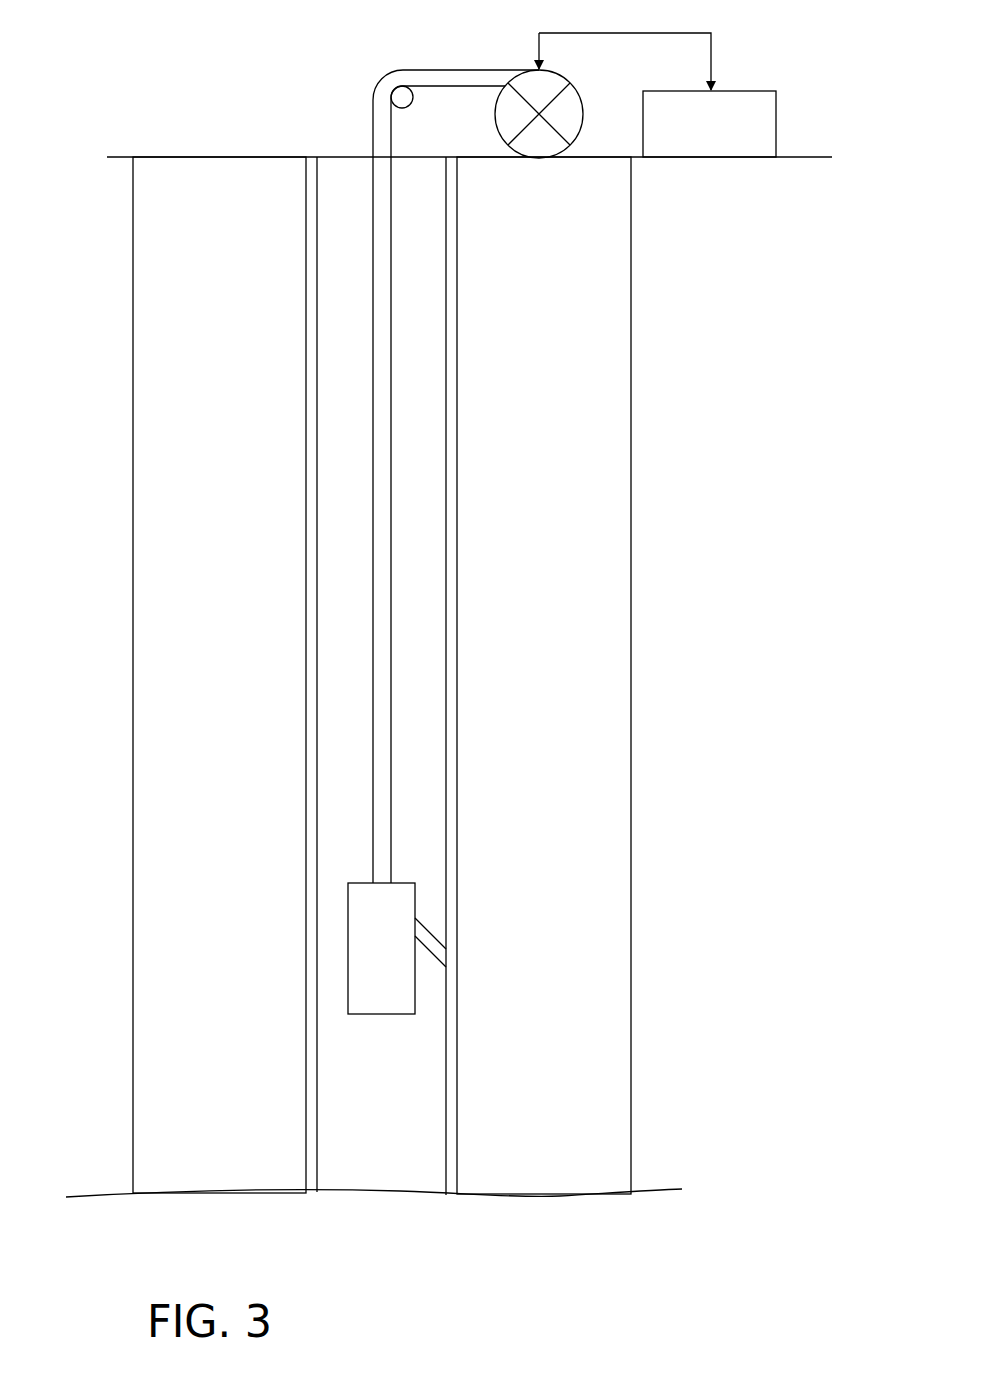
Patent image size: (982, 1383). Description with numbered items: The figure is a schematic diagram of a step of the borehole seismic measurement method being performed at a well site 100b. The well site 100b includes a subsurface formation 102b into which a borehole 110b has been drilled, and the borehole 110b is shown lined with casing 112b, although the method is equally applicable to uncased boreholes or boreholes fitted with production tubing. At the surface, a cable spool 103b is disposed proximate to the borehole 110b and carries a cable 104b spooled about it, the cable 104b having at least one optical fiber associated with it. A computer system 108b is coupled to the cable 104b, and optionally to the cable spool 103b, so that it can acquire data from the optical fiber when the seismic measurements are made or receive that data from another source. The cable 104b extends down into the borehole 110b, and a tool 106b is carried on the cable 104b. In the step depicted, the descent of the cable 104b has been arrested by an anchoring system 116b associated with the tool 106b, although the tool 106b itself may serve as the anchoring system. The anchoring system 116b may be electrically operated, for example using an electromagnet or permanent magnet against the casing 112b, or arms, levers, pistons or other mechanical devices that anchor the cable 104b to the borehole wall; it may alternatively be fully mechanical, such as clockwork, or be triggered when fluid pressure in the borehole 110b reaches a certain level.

The well site 100b is at (86, 66).
The subsurface formation 102b is at (238, 179).
The cable spool 103b is at (515, 73).
The cable 104b is at (457, 68).
The tool 106b is at (348, 966).
The computer system 108b is at (764, 91).
The borehole 110b is at (348, 189).
The casing 112b is at (317, 157).
The anchoring system 116b is at (433, 933).